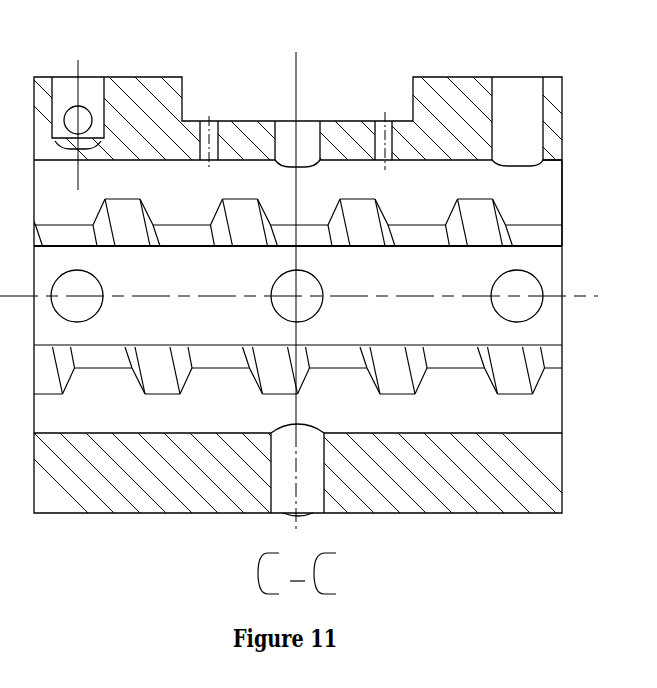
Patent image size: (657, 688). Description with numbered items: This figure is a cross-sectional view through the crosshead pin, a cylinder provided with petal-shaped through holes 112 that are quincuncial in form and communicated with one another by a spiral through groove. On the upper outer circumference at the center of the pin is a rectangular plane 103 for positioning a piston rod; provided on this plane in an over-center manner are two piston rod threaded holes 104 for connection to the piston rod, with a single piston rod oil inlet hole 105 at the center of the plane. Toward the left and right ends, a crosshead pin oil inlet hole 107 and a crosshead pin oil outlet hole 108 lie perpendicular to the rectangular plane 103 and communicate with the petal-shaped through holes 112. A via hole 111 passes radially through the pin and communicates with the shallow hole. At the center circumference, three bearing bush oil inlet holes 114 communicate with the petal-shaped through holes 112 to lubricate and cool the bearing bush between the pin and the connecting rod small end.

The rectangular plane 103 is at (359, 108).
The piston rod threaded hole 104 is at (209, 105).
The piston rod oil inlet hole 105 is at (302, 107).
The crosshead pin oil inlet hole 107 is at (504, 100).
The crosshead pin oil outlet hole 108 is at (67, 74).
The via hole 111 is at (86, 114).
The petal-shaped through hole 112 is at (535, 187).
The bearing bush oil inlet hole 114 is at (294, 279).